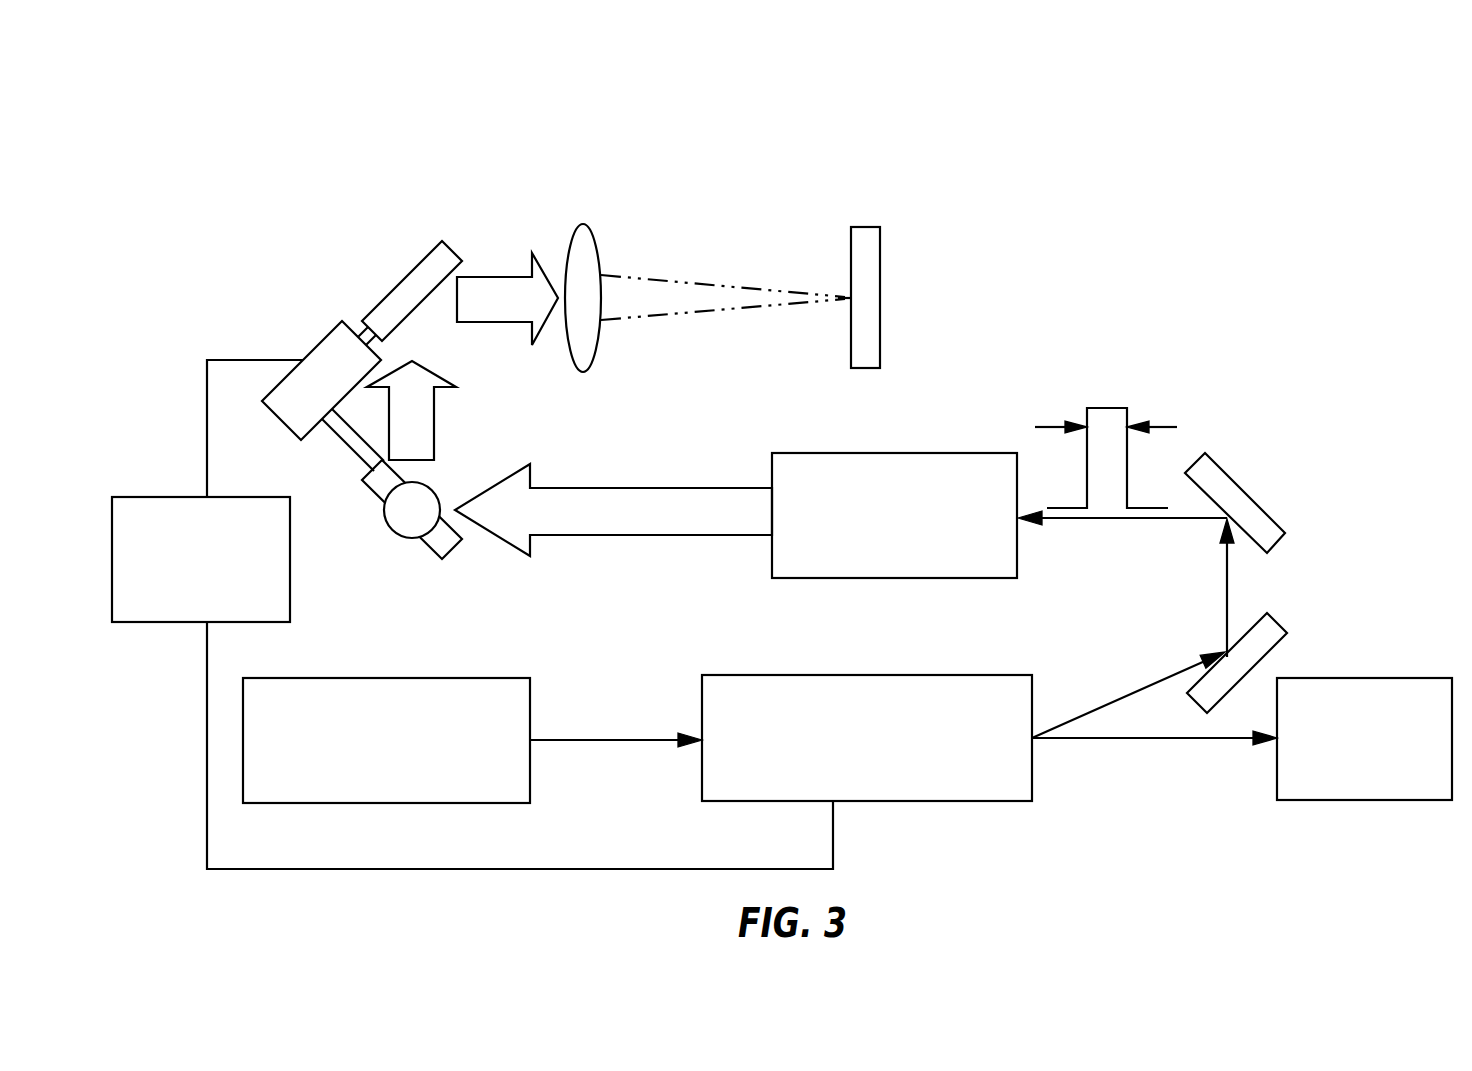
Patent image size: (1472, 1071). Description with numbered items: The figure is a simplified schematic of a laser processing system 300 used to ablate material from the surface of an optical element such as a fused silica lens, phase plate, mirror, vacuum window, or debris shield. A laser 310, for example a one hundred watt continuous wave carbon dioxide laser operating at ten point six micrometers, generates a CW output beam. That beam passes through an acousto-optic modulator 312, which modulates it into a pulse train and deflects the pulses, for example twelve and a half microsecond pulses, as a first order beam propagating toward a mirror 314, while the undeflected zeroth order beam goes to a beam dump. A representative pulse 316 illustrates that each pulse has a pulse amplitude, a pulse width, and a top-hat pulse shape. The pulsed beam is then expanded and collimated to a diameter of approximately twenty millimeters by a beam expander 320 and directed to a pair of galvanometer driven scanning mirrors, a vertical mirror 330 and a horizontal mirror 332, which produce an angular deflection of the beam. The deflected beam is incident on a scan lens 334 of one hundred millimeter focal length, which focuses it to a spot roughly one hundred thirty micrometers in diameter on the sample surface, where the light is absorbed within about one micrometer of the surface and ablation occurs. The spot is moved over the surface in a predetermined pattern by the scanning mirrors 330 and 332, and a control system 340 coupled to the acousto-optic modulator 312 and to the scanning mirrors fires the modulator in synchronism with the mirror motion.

The laser processing system 300 is at (922, 105).
The laser 310 is at (382, 803).
The acousto-optic modulator 312 is at (923, 802).
The mirror 314 is at (1283, 618).
The pulse 316 is at (1102, 408).
The beam expander 320 is at (857, 453).
The scanning mirror 330 is at (428, 550).
The scanning mirror 332 is at (403, 277).
The scan lens 334 is at (583, 224).
The control system 340 is at (112, 497).